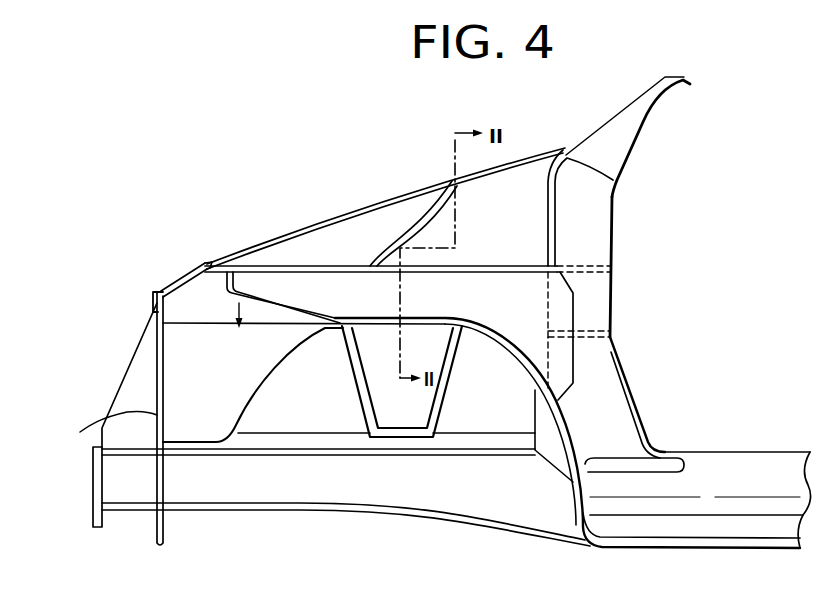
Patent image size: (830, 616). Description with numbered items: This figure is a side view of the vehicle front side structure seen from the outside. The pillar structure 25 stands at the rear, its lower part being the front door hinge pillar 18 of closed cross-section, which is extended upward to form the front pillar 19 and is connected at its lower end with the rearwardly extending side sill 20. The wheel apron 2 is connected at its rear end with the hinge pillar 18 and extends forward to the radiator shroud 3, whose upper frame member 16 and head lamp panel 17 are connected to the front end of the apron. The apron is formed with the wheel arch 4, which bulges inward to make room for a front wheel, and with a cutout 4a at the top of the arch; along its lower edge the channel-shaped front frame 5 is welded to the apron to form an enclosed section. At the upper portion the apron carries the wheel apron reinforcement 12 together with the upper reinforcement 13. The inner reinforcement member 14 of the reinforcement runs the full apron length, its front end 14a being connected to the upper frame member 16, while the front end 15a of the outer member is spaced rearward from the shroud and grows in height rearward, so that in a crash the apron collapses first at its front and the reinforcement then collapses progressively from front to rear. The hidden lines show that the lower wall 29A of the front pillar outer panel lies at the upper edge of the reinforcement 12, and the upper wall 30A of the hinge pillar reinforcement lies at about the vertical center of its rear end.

The wheel apron 2 is at (330, 234).
The radiator shroud 3 is at (100, 398).
The wheel arch 4 is at (305, 422).
The cutout 4a is at (405, 417).
The front frame 5 is at (207, 497).
The wheel apron reinforcement 12 is at (503, 340).
The upper reinforcement 13 is at (522, 175).
The inner reinforcement member 14 is at (239, 330).
The front end of inner member 14a is at (180, 292).
The front end of outer member 15a is at (247, 283).
The upper frame member 16 is at (152, 290).
The head lamp panel 17 is at (105, 428).
The front door hinge pillar 18 is at (600, 305).
The front pillar 19 is at (635, 120).
The side sill 20 is at (663, 525).
The pillar structure 25 is at (628, 221).
The lower wall of front pillar outer panel 29A is at (600, 272).
The upper wall of reinforcement 30A is at (600, 330).